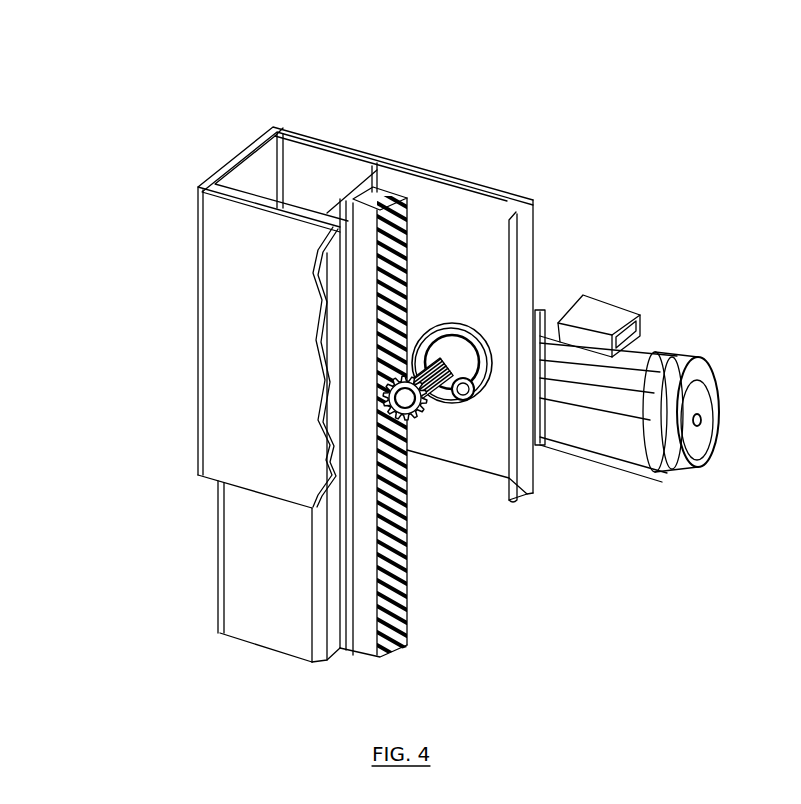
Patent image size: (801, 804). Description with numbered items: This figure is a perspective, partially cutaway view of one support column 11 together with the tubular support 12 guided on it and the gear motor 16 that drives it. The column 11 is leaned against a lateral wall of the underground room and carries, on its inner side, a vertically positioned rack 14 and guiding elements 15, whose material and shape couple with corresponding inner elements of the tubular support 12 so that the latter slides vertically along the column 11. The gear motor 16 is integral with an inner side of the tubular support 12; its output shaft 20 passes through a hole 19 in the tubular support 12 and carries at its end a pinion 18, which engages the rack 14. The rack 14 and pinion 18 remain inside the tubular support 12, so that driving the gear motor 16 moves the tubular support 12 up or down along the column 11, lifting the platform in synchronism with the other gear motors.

The support column 11 is at (322, 162).
The tubular support 12 is at (227, 320).
The rack 14 is at (360, 567).
The guiding elements 15 is at (255, 575).
The gear motor 16 is at (647, 353).
The pinion 18 is at (433, 420).
The hole 19 is at (462, 380).
The output shaft 20 is at (460, 350).